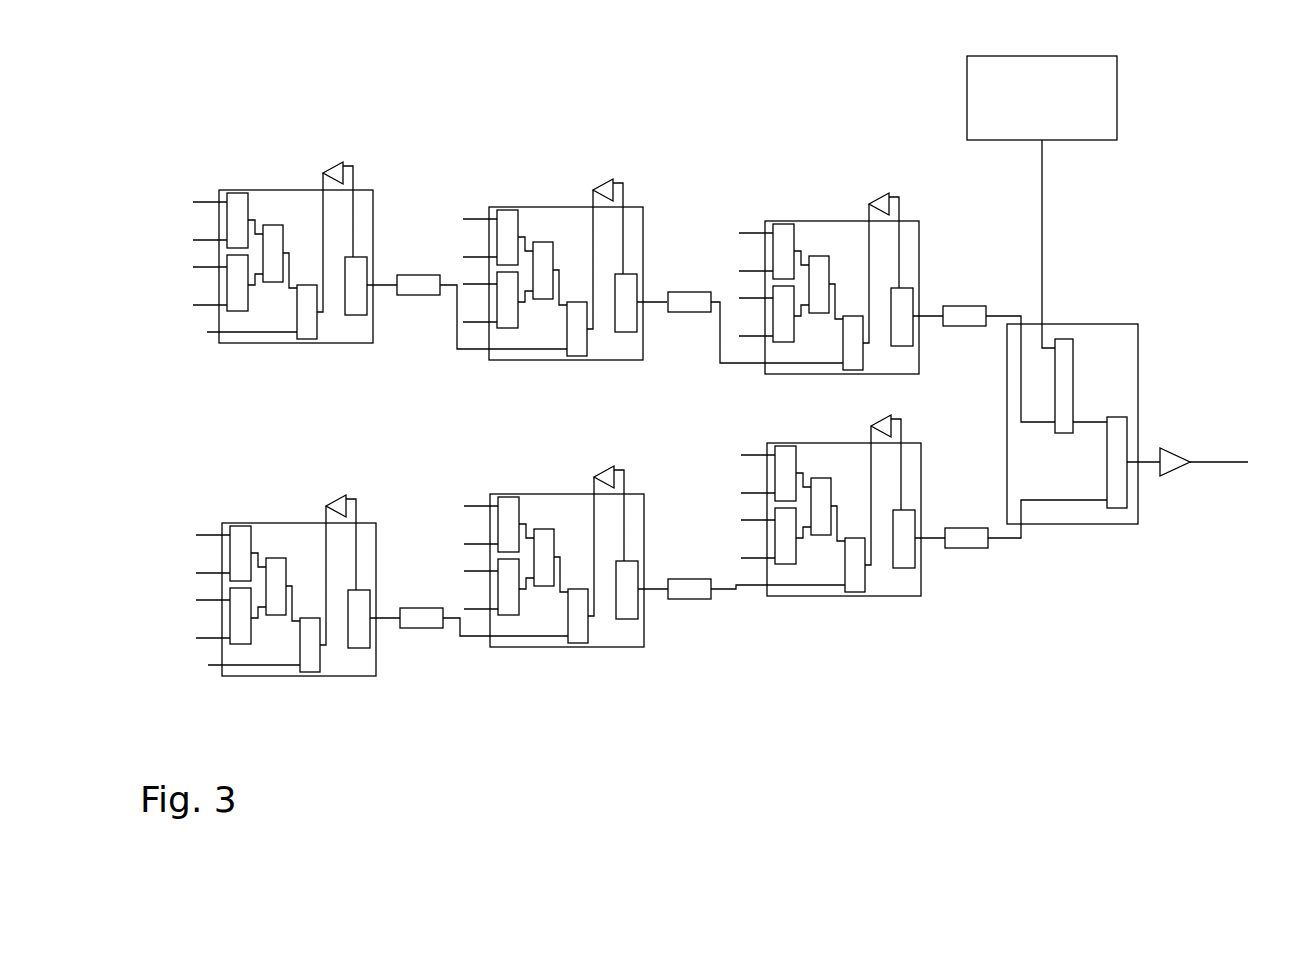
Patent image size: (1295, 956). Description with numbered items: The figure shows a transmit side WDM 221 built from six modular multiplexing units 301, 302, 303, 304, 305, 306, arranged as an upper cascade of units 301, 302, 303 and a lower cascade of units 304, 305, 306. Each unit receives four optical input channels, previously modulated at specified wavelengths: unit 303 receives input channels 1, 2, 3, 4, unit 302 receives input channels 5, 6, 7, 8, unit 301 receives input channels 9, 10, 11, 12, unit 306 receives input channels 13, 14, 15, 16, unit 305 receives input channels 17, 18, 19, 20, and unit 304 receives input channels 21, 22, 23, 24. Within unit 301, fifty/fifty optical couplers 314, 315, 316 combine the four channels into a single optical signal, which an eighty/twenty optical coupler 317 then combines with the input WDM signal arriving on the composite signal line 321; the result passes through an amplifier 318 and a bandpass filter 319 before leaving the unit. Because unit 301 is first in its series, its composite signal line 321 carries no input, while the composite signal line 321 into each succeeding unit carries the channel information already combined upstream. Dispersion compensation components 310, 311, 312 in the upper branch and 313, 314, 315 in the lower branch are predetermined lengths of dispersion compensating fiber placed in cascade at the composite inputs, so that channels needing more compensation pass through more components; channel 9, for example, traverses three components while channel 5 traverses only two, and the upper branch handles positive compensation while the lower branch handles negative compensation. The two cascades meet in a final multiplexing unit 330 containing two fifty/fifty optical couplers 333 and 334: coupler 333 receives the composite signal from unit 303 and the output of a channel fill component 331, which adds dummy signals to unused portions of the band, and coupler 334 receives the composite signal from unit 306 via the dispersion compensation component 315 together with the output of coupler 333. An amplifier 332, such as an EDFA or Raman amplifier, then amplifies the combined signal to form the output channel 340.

The transmit side WDM 221 is at (222, 106).
The modular multiplexing unit 301 is at (373, 190).
The modular multiplexing unit 302 is at (643, 207).
The modular multiplexing unit 303 is at (920, 221).
The modular multiplexing unit 304 is at (376, 676).
The modular multiplexing unit 305 is at (644, 647).
The modular multiplexing unit 306 is at (920, 596).
The dispersion compensation component 310 is at (418, 275).
The dispersion compensation component 311 is at (685, 292).
The dispersion compensation component 312 is at (962, 306).
The dispersion compensation component 313 is at (416, 608).
The optical coupler 314 is at (247, 193).
The optical coupler 315 is at (248, 313).
The optical coupler 316 is at (282, 226).
The optical coupler 317 is at (307, 343).
The amplifier 318 is at (336, 166).
The bandpass filter 319 is at (367, 257).
The composite signal line 321 is at (207, 332).
The final multiplexing unit 330 is at (1138, 337).
The channel fill component 331 is at (1117, 74).
The amplifier 332 is at (1172, 450).
The optical coupler 333 is at (1073, 355).
The optical coupler 334 is at (1127, 421).
The output channel 340 is at (1233, 474).
The input channel 1 is at (749, 233).
The input channel 2 is at (749, 271).
The input channel 3 is at (749, 298).
The input channel 4 is at (749, 336).
The input channel 5 is at (473, 219).
The input channel 6 is at (473, 257).
The input channel 7 is at (473, 284).
The input channel 8 is at (473, 322).
The input channel 9 is at (203, 202).
The input channel 10 is at (198, 240).
The input channel 11 is at (198, 267).
The input channel 12 is at (198, 305).
The input channel 13 is at (746, 455).
The input channel 14 is at (746, 493).
The input channel 15 is at (746, 520).
The input channel 16 is at (746, 558).
The input channel 17 is at (469, 506).
The input channel 18 is at (469, 544).
The input channel 19 is at (469, 571).
The input channel 20 is at (469, 609).
The input channel 21 is at (201, 535).
The input channel 22 is at (201, 573).
The input channel 23 is at (201, 600).
The input channel 24 is at (201, 638).